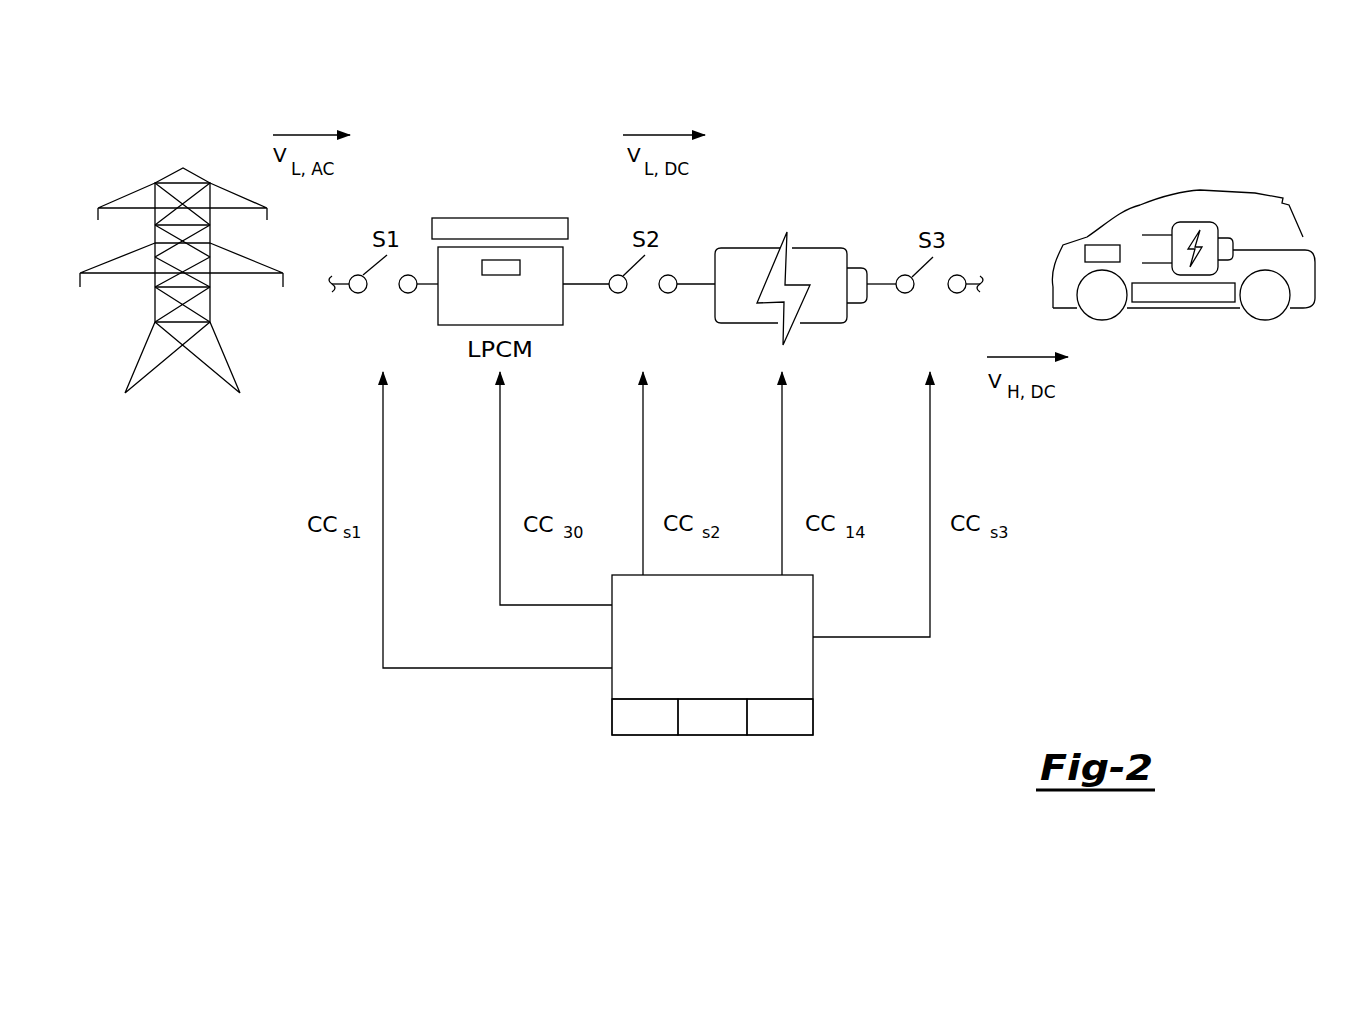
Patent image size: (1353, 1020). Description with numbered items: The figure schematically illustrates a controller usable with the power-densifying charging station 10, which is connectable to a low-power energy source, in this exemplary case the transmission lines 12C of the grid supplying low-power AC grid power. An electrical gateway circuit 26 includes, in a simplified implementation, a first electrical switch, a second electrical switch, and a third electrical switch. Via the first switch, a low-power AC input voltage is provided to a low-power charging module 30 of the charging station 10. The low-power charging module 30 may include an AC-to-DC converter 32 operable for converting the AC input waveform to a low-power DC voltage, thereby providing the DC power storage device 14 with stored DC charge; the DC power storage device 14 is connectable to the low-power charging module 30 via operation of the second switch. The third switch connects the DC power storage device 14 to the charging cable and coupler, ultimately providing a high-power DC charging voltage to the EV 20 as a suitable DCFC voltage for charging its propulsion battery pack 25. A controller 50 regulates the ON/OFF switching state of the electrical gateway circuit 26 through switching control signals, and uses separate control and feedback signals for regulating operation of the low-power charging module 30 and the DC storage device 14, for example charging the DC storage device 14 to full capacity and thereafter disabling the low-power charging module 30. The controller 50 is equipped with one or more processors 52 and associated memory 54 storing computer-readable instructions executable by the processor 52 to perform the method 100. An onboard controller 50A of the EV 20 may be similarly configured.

The power-densifying charging station 10 is at (979, 588).
The transmission lines 12C is at (183, 168).
The DC power storage device 14 is at (789, 197).
The EV 20 is at (1163, 258).
The propulsion battery pack 25 is at (1193, 302).
The electrical gateway circuit 26 is at (978, 138).
The low-power charging module (LPCM) 30 is at (516, 244).
The AC-to-DC converter 32 is at (467, 267).
The controller 50 is at (755, 655).
The onboard controller 50A is at (1085, 250).
The processor 52 is at (712, 717).
The memory 54 is at (780, 717).
The method 100 is at (645, 717).